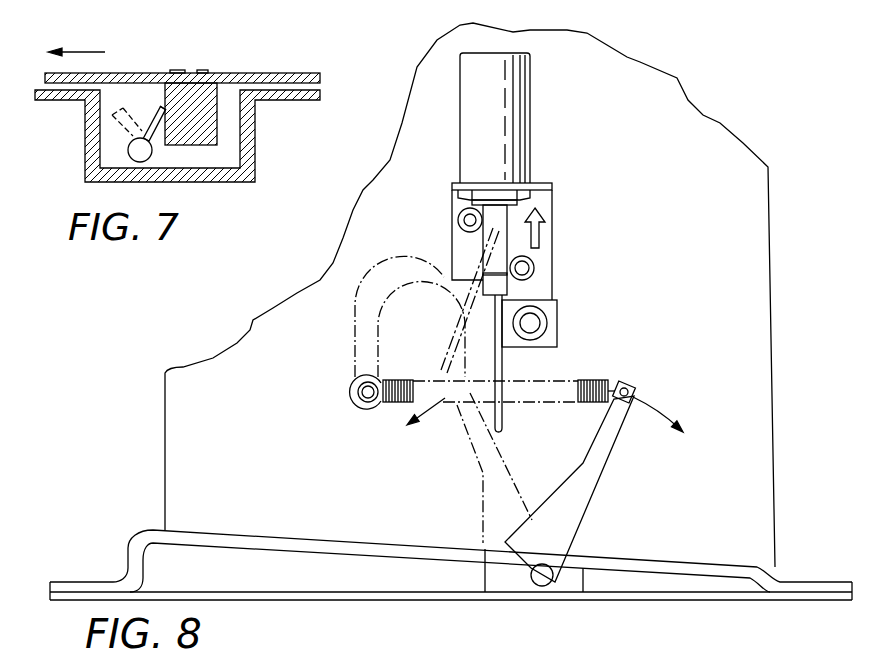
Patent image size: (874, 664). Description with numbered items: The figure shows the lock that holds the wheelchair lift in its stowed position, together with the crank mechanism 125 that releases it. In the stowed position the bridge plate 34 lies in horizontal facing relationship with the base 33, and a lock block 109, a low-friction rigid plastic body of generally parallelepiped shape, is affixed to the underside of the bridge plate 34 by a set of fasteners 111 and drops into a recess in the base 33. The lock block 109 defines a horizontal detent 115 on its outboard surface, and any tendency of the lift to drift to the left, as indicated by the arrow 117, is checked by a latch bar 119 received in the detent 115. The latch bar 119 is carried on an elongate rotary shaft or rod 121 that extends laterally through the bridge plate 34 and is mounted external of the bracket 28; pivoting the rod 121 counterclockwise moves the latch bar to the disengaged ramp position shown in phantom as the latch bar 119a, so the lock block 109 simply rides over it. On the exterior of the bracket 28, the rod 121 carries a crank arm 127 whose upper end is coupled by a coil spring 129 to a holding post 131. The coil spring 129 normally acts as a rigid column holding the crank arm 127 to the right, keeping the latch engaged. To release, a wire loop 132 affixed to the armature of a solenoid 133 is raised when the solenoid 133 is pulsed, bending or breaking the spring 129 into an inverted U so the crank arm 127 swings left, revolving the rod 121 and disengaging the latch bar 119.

In FIG. 8, the bracket 28 is at (652, 72).
In FIG. 7, the base 33 is at (317, 100).
In FIG. 7, the bridge plate 34 is at (290, 73).
In FIG. 7, the lock block 109 is at (217, 133).
In FIG. 7, the fasteners 111 is at (185, 72).
In FIG. 7, the horizontal detent 115 is at (167, 107).
In FIG. 7, the arrow 117 is at (87, 50).
In FIG. 7, the latch bar 119 is at (153, 138).
In FIG. 7, the latch bar in phantom ramp position 119a is at (117, 128).
In FIG. 7, the rotary shaft or rod 121 is at (128, 152).
In FIG. 8, the rotary shaft or rod 121 is at (537, 585).
In FIG. 8, the crank mechanism 125 is at (582, 282).
In FIG. 8, the crank arm 127 is at (603, 467).
In FIG. 8, the coil spring 129 is at (388, 257).
In FIG. 8, the holding post 131 is at (350, 390).
In FIG. 8, the wire loop 132 is at (438, 337).
In FIG. 8, the solenoid 133 is at (525, 88).